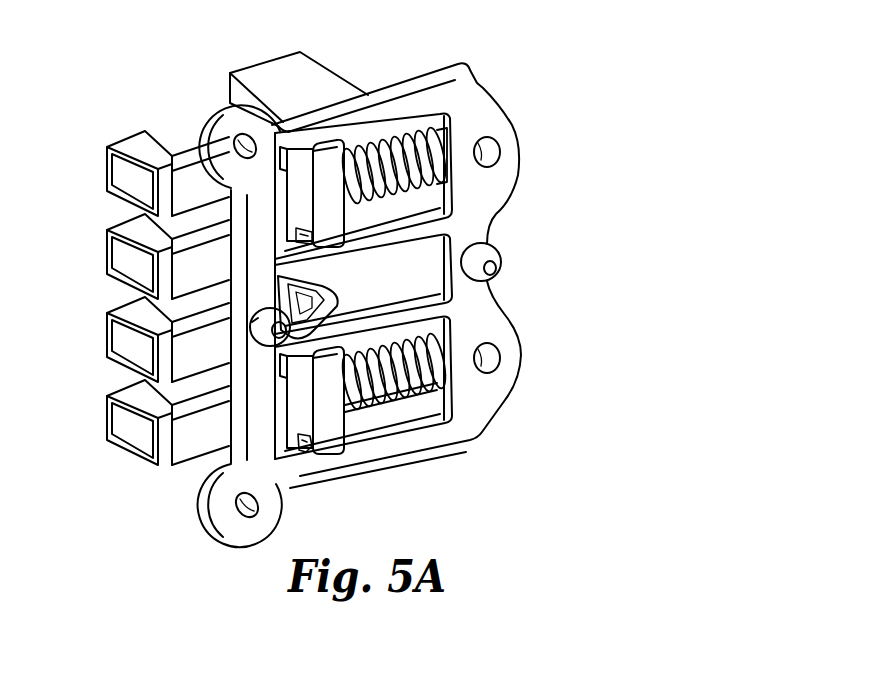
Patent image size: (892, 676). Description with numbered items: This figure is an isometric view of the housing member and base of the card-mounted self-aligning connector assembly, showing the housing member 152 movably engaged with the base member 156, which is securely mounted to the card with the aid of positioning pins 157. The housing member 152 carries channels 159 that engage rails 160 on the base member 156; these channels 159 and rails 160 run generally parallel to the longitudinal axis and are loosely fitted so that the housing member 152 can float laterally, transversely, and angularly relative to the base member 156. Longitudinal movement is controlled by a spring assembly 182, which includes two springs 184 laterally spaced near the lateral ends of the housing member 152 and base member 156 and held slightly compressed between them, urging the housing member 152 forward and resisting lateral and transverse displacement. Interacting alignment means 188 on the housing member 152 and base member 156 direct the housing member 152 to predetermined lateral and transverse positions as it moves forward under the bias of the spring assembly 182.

The housing member 152 is at (268, 70).
The base member 156 is at (478, 92).
The positioning pins 157 is at (258, 318).
The channels 159 is at (299, 452).
The rails 160 is at (388, 412).
The spring assembly 182 is at (446, 143).
The springs 184 is at (441, 145).
The alignment means 188 is at (340, 291).